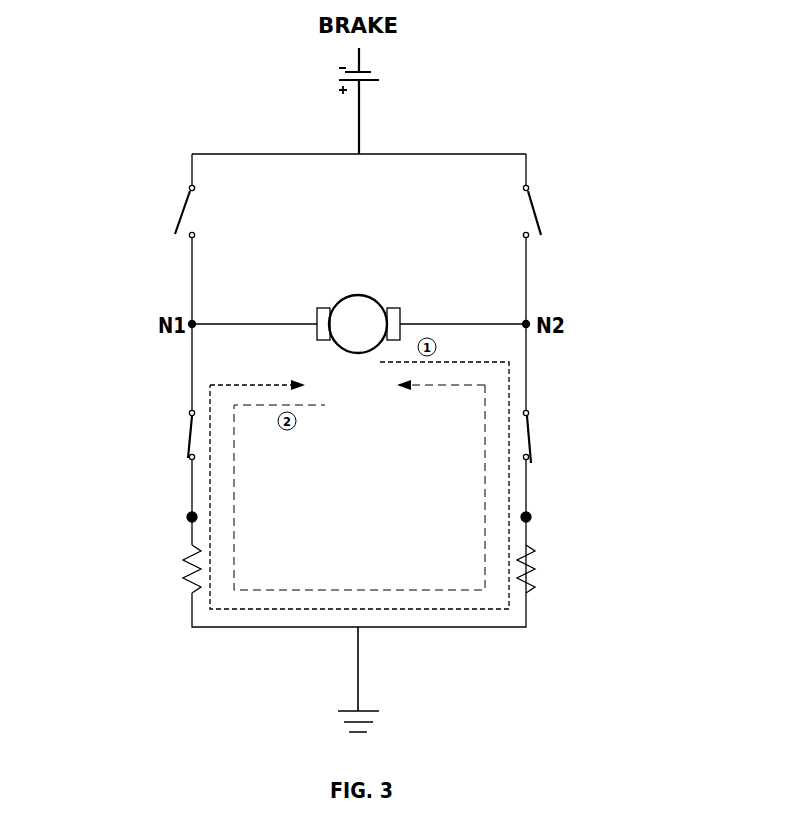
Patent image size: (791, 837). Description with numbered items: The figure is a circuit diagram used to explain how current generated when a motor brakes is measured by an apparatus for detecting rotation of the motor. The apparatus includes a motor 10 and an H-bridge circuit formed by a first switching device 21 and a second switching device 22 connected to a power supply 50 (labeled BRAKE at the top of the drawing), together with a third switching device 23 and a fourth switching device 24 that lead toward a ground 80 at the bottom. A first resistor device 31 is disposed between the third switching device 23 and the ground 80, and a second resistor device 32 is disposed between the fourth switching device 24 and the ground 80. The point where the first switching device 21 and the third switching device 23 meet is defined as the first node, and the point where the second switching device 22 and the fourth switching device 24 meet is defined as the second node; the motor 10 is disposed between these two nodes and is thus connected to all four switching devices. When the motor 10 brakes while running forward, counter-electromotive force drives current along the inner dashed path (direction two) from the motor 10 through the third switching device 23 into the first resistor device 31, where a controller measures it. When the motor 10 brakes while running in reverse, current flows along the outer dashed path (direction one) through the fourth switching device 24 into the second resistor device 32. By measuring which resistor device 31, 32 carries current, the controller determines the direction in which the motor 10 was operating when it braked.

The motor 10 is at (358, 295).
The first switching device 21 is at (182, 212).
The second switching device 22 is at (539, 212).
The third switching device 23 is at (189, 440).
The fourth switching device 24 is at (529, 438).
The first resistor device 31 is at (181, 570).
The second resistor device 32 is at (536, 570).
The power supply 50 is at (378, 73).
The ground 80 is at (343, 716).